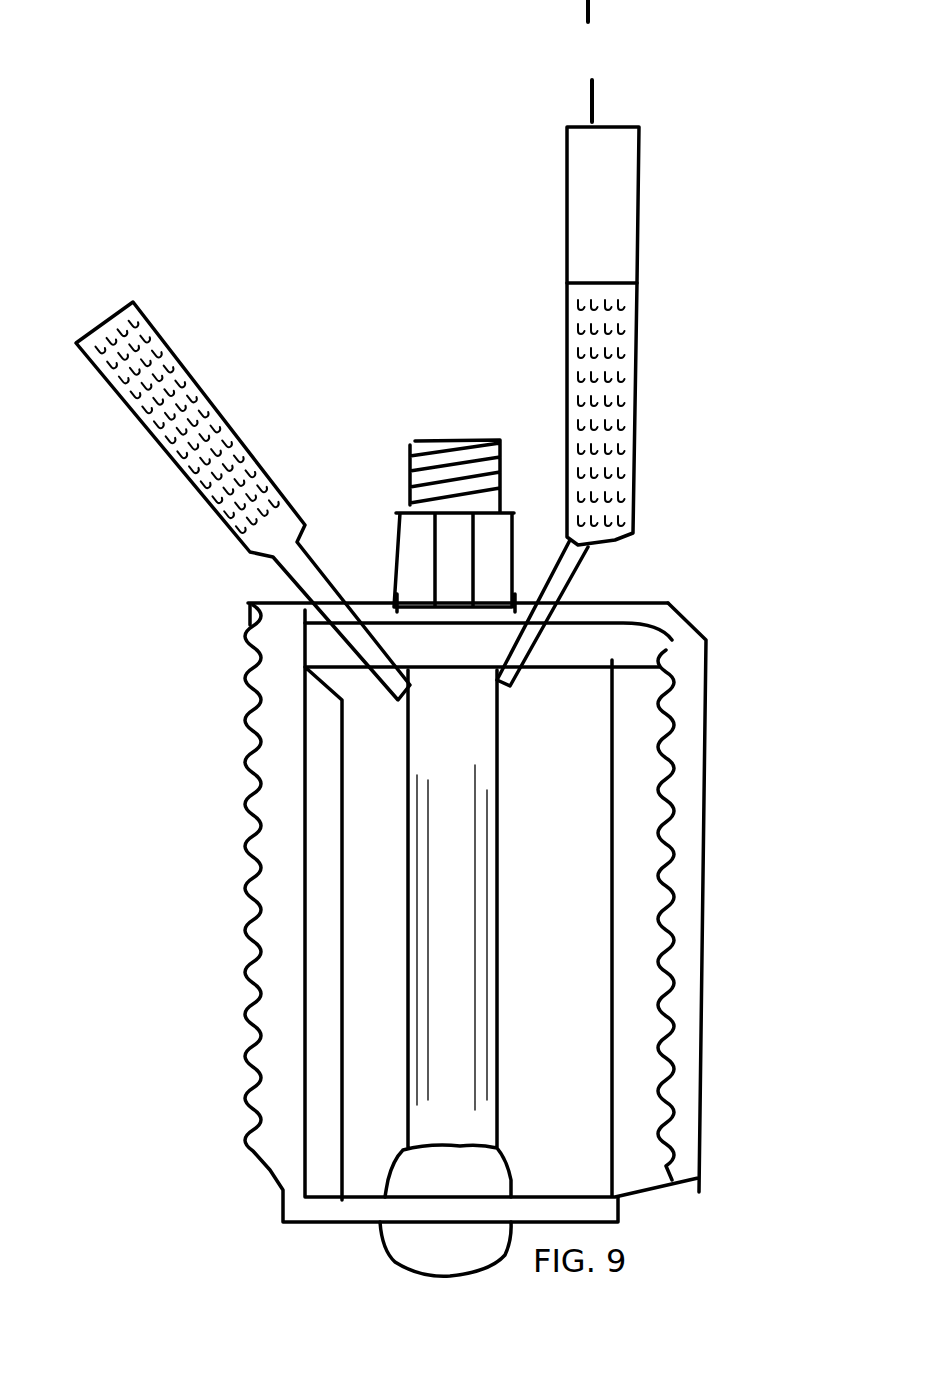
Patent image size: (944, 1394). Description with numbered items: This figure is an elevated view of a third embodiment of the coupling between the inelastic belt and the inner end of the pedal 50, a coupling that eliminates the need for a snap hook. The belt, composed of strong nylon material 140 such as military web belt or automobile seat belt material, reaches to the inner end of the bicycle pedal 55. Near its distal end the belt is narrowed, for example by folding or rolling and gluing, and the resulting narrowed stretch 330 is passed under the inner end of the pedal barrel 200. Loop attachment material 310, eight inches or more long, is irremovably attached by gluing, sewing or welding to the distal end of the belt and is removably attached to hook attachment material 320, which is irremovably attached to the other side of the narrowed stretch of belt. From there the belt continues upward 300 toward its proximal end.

The pedal 50 is at (212, 964).
The inner end of the bicycle pedal 55 is at (214, 629).
The strong nylon material 140 is at (625, 207).
The pedal barrel 200 is at (503, 800).
The belt continuing upward 300 is at (585, 61).
The loop attachment material 310 is at (135, 407).
The hook attachment material 320 is at (650, 410).
The narrowed stretch 330 is at (555, 592).